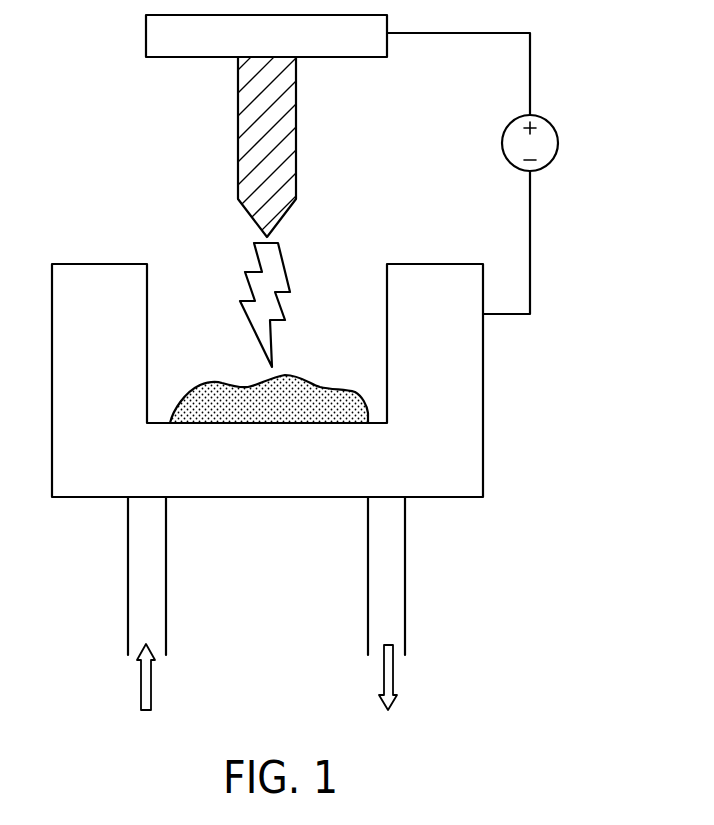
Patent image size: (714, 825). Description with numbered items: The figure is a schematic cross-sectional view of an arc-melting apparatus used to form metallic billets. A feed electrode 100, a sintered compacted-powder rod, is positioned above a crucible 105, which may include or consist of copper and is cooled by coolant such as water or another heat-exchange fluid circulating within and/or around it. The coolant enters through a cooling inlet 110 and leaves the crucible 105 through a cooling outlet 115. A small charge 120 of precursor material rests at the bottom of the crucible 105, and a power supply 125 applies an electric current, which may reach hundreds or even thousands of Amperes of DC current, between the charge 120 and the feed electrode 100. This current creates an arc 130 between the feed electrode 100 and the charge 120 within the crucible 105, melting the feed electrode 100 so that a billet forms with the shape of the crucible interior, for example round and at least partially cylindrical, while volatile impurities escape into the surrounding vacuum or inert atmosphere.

The feed electrode 100 is at (297, 133).
The crucible 105 is at (484, 404).
The cooling inlet 110 is at (167, 573).
The cooling outlet 115 is at (406, 573).
The charge 120 is at (319, 385).
The power supply 125 is at (558, 131).
The arc 130 is at (283, 253).